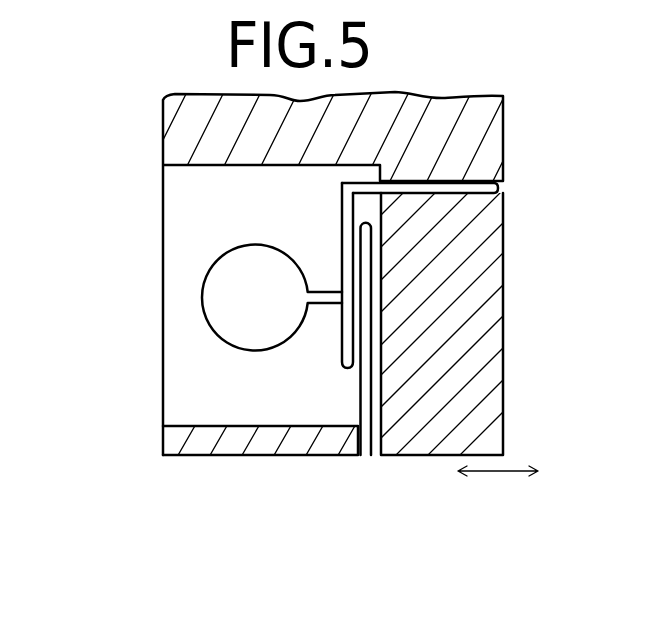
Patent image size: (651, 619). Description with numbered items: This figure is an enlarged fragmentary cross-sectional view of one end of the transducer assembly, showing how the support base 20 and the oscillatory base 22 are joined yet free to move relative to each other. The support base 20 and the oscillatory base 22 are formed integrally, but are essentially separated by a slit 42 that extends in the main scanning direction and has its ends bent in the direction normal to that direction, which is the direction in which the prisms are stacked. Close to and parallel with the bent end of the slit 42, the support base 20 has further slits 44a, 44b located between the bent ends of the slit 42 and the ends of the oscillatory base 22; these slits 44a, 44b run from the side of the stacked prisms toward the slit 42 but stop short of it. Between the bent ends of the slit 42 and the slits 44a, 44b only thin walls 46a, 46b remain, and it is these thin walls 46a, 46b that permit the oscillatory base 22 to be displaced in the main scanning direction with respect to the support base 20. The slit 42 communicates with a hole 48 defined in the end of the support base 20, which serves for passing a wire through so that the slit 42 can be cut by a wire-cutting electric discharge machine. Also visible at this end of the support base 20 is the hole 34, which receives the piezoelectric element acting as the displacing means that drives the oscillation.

The support base 20 is at (487, 136).
The oscillatory base 22 is at (488, 315).
The hole 34 is at (257, 416).
The slit 42 is at (495, 185).
The slit 44a is at (354, 399).
The slit 44b is at (362, 457).
The thin wall 46a is at (193, 345).
The thin wall 46b is at (355, 343).
The hole 48 is at (222, 312).